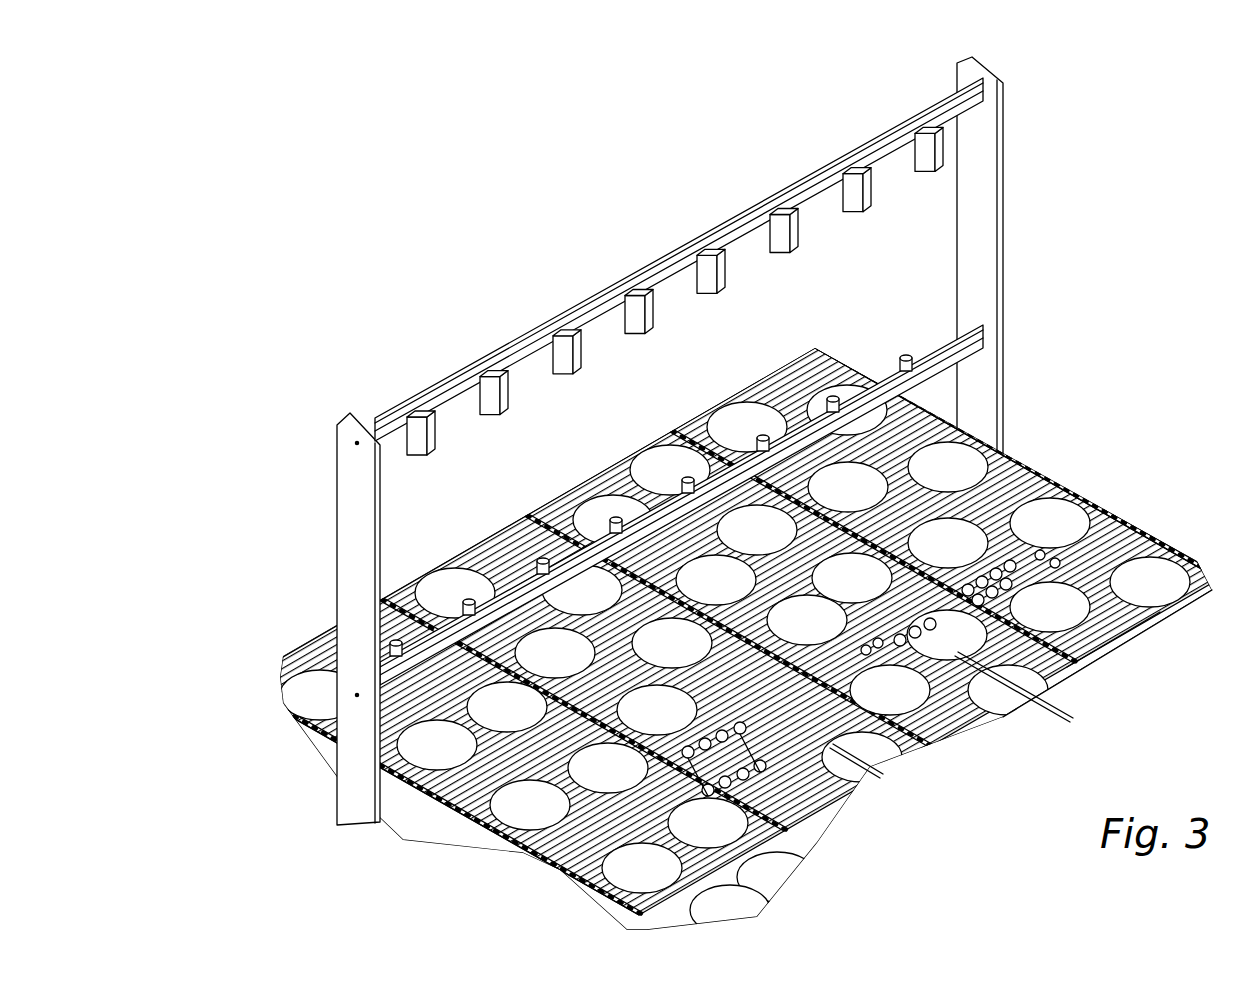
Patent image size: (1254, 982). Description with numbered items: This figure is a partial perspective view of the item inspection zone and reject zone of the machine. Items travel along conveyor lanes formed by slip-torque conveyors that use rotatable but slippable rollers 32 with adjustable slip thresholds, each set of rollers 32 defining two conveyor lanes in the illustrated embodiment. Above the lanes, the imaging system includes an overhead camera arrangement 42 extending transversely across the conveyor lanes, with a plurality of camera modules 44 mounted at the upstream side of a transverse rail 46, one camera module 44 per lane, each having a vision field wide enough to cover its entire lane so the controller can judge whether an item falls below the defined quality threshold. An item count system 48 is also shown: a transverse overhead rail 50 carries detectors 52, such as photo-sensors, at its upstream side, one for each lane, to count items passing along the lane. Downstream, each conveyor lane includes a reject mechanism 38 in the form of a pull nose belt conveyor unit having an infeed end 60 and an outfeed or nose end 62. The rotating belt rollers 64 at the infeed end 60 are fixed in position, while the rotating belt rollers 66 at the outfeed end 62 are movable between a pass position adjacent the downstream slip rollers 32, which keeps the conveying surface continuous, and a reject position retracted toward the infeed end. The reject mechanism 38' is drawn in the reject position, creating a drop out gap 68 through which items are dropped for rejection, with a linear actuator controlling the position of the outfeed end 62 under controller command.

The rollers 32 is at (1085, 497).
The reject mechanism 38 is at (993, 665).
The reject mechanism 38' is at (915, 785).
The overhead camera arrangement 42 is at (318, 492).
The camera modules 44 is at (557, 353).
The transverse rail 46 is at (457, 390).
The item count system 48 is at (1030, 305).
The transverse overhead rail 50 is at (990, 362).
The detectors 52 is at (903, 348).
The infeed end 60 is at (1001, 548).
The outfeed end 62 is at (1100, 658).
The rotating belt rollers 64 is at (933, 600).
The rotating belt rollers 66 is at (1003, 670).
The drop out gap 68 is at (753, 790).